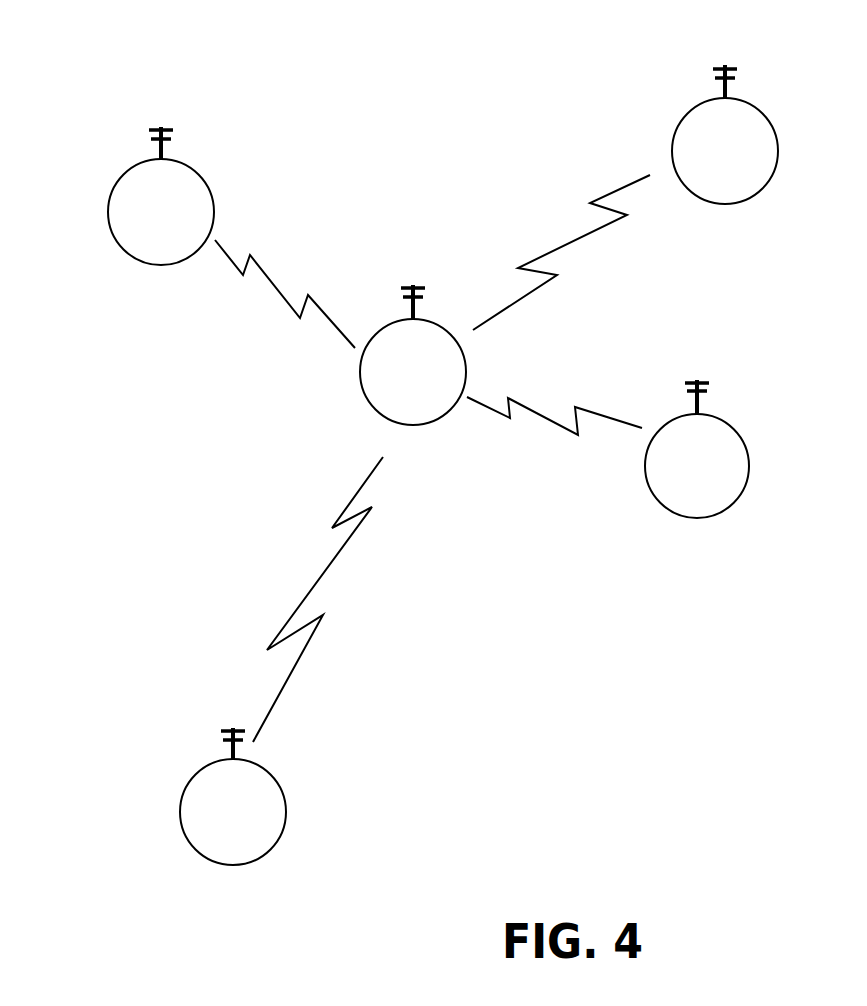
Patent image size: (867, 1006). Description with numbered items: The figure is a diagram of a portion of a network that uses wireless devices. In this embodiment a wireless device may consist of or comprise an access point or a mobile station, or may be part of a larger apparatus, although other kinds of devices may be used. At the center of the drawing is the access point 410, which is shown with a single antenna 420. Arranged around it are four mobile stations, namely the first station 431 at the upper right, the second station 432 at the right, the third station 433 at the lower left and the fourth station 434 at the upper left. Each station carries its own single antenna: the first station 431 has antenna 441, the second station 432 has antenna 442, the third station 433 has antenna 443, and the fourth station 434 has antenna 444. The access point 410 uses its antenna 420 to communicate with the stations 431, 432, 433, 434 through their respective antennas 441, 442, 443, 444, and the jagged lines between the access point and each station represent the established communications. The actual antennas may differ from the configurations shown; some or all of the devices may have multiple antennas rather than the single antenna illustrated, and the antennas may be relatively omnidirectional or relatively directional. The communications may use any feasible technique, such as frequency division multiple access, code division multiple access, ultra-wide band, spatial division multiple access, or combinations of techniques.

The access point (AP) 410 is at (361, 374).
The antenna 420 is at (422, 297).
The mobile station (STA) 431 is at (689, 112).
The mobile station (STA) 432 is at (727, 508).
The mobile station (STA) 433 is at (182, 800).
The mobile station (STA) 434 is at (108, 208).
The antenna 441 is at (737, 78).
The antenna 442 is at (710, 392).
The antenna 443 is at (225, 740).
The antenna 444 is at (172, 140).